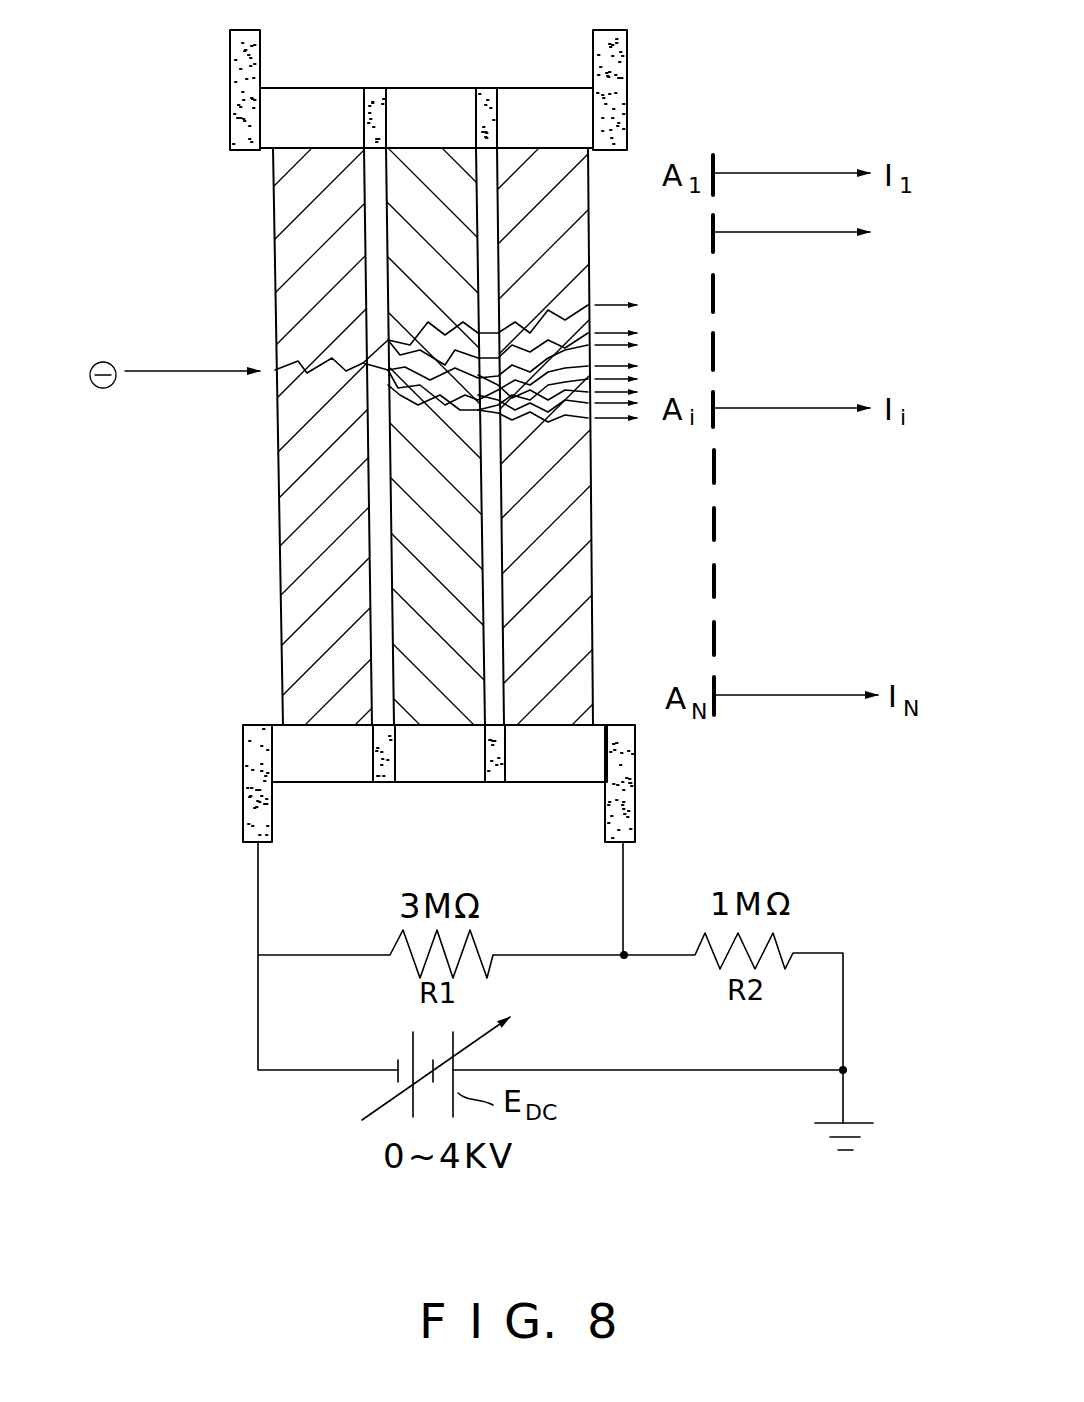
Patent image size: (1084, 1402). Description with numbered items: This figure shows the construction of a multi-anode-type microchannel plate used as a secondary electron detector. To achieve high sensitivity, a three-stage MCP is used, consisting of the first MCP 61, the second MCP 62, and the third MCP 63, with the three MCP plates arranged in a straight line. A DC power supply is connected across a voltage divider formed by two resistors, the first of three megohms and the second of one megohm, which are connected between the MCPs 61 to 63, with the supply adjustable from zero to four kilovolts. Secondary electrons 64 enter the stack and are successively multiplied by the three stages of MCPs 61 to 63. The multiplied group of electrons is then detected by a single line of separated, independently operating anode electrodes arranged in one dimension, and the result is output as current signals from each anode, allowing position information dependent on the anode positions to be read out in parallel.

The first MCP 61 is at (318, 167).
The second MCP 62 is at (430, 165).
The third MCP 63 is at (543, 160).
The secondary electrons 64 is at (175, 358).